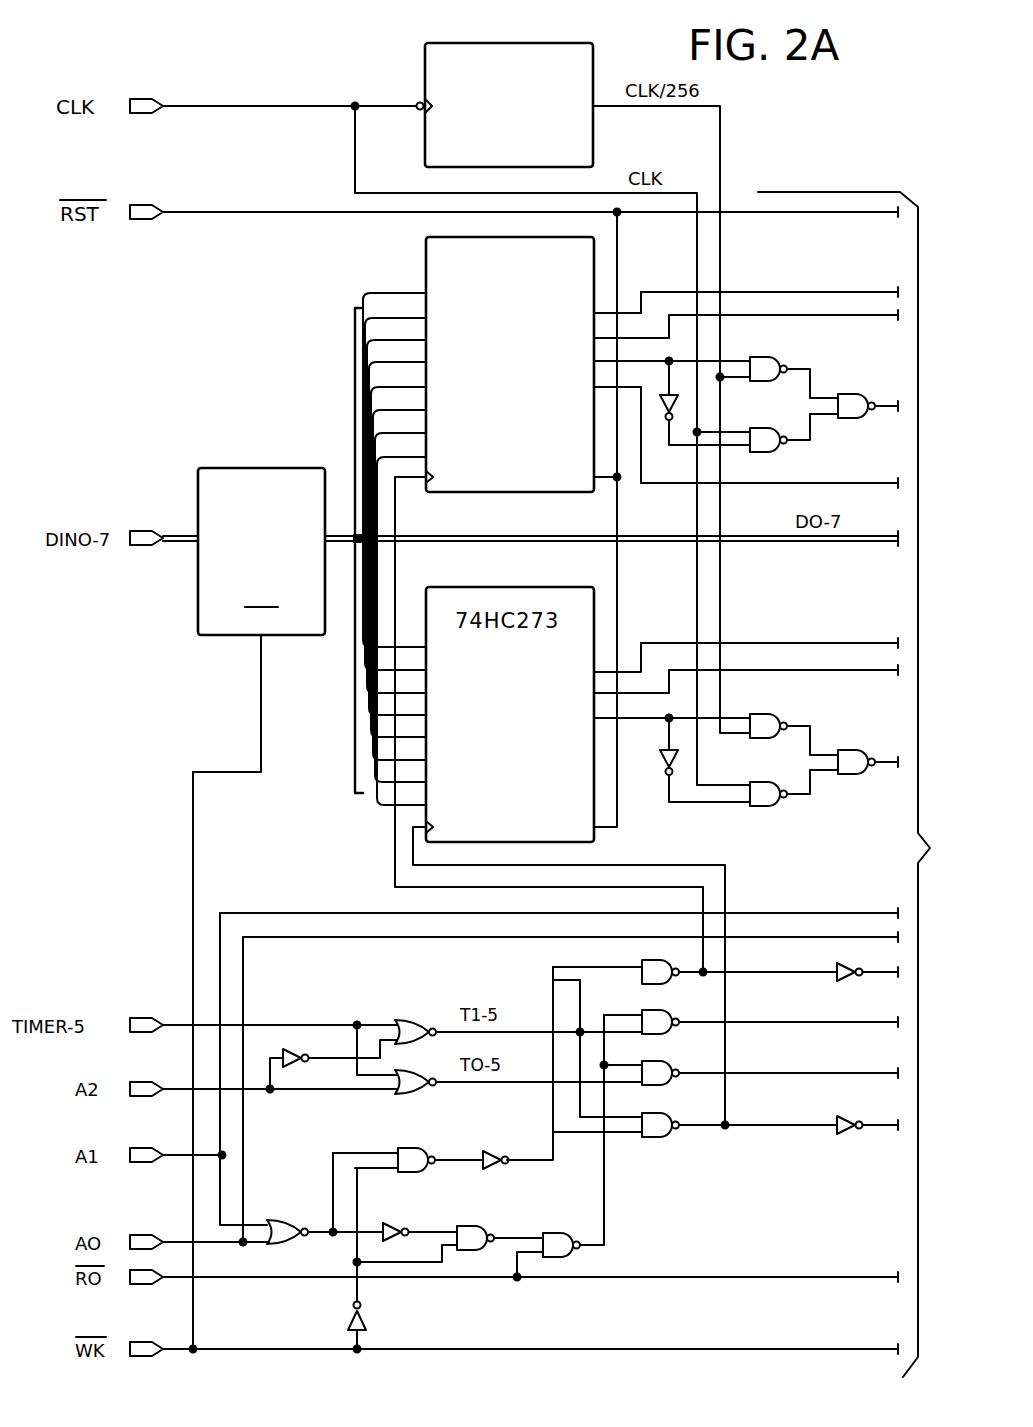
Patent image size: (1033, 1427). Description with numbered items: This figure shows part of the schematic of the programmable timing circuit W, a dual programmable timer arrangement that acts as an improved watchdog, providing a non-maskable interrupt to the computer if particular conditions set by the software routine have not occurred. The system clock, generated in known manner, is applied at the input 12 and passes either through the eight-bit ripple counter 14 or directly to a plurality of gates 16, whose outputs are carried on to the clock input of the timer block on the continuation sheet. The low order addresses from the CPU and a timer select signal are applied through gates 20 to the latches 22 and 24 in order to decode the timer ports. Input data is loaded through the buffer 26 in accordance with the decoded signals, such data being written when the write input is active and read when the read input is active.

The system clock input 12 is at (152, 99).
The 8-bit ripple counter 14 is at (519, 150).
The gates 16 is at (803, 358).
The gates 20 is at (400, 1005).
The latch 22 is at (646, 962).
The latch 24 is at (520, 384).
The buffer 26 is at (272, 571).
The programmable timing circuit W is at (808, 132).